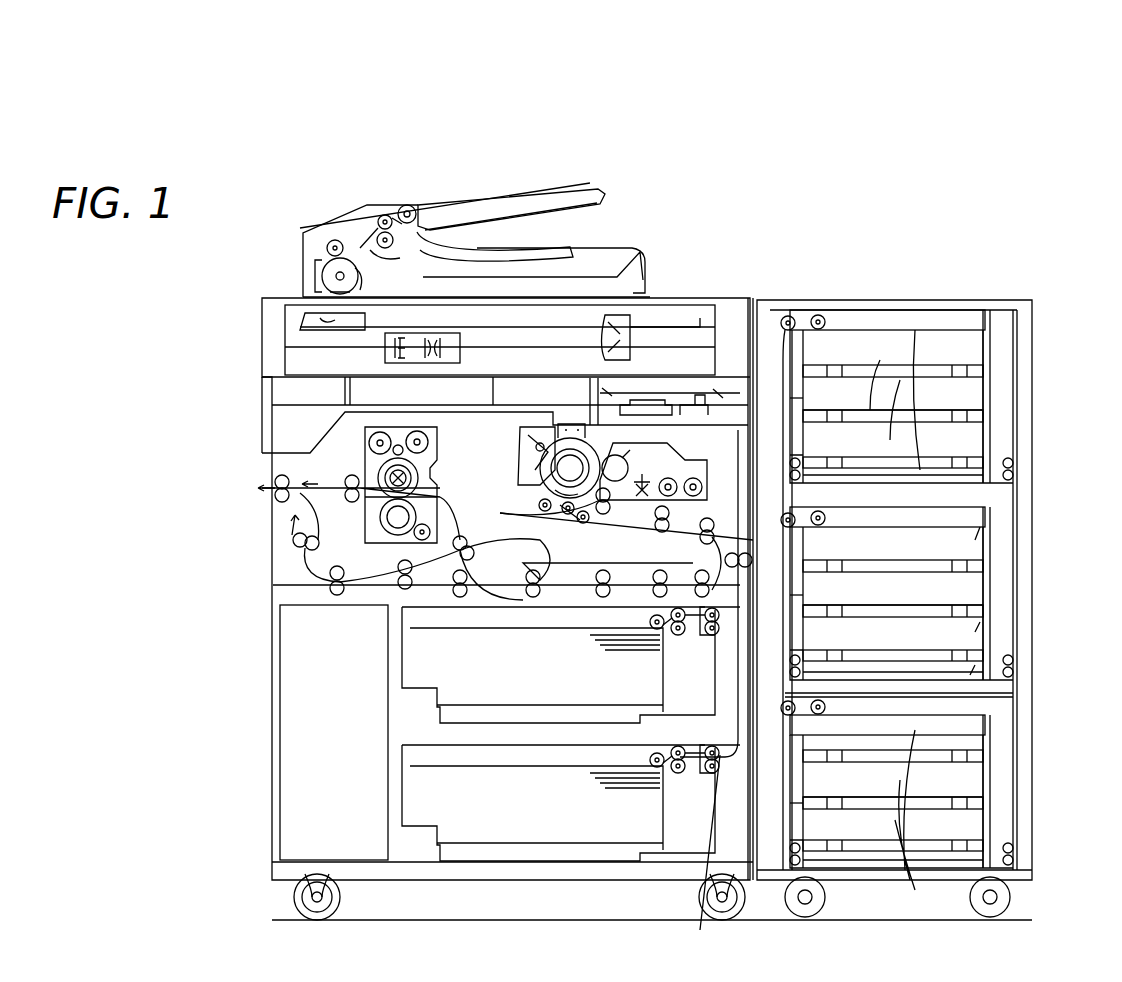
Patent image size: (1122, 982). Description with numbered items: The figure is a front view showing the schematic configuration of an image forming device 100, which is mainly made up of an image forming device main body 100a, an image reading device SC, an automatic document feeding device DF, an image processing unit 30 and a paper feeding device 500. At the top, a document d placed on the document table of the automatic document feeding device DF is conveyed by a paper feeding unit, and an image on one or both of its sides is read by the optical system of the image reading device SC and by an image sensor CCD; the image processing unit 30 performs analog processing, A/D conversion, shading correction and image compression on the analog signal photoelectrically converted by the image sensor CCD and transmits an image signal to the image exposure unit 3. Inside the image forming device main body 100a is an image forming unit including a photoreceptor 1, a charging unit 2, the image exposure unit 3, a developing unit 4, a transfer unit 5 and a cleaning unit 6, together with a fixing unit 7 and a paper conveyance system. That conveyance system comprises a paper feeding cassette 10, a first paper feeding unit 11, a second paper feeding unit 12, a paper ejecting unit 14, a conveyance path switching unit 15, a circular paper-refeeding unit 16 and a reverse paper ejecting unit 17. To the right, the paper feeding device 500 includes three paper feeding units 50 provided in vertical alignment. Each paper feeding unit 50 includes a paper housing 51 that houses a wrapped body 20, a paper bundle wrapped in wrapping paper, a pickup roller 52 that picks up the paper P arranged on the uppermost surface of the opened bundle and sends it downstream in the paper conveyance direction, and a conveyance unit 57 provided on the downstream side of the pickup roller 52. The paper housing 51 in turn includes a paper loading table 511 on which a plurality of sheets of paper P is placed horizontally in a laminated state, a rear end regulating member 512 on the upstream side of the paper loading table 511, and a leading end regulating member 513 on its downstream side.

The image forming device 100 is at (780, 240).
The image forming device main body 100a is at (262, 430).
The image processing unit 30 is at (272, 385).
The image sensor CCD is at (385, 350).
The image reading device SC is at (672, 322).
The automatic document feeding device DF is at (608, 197).
The document d is at (528, 204).
The photoreceptor 1 is at (548, 452).
The charging unit 2 is at (572, 423).
The image exposure unit 3 is at (740, 425).
The developing unit 4 is at (707, 470).
The transfer unit 5 is at (562, 518).
The cleaning unit 6 is at (518, 450).
The fixing unit 7 is at (357, 443).
The paper feeding cassette 10 is at (402, 662).
The first paper feeding unit 11 is at (680, 635).
The second paper feeding unit 12 is at (655, 522).
The paper ejecting unit 14 is at (262, 481).
The conveyance path switching unit 15 is at (335, 498).
The circular paper-refeeding unit 16 is at (500, 580).
The reverse paper ejecting unit 17 is at (285, 522).
The paper P is at (503, 637).
The wrapped body 20 is at (915, 330).
The paper feeding unit 50 is at (1042, 324).
The paper housing 51 is at (995, 368).
The pickup roller 52 is at (821, 314).
The conveyance unit 57 is at (745, 380).
The paper feeding device 500 is at (985, 293).
The paper loading table 511 is at (960, 365).
The rear end regulating member 512 is at (985, 420).
The leading end regulating member 513 is at (815, 440).